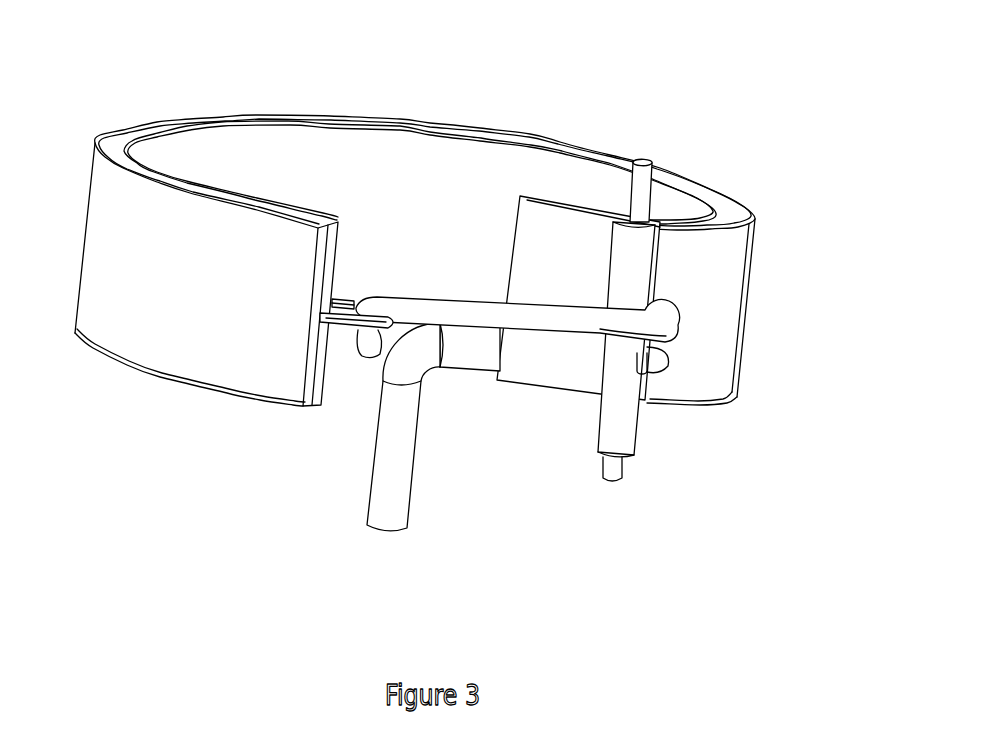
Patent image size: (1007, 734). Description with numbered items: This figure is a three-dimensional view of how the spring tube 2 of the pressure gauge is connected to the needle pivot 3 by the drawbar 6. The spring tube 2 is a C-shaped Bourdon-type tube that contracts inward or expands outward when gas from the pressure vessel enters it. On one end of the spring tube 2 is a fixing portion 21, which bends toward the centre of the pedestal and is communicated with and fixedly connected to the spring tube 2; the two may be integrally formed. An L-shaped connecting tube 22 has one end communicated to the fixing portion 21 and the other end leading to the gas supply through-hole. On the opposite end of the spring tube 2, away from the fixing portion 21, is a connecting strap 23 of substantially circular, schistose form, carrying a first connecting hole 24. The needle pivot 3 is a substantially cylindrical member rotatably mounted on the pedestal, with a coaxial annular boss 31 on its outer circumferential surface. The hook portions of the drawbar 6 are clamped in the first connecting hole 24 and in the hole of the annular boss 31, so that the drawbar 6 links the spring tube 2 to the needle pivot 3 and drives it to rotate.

The spring tube 2 is at (723, 288).
The fixing portion 21 is at (535, 240).
The connecting tube 22 is at (387, 518).
The connecting strap 23 is at (354, 334).
The first connecting hole 24 is at (350, 302).
The needle pivot 3 is at (617, 437).
The annular boss 31 is at (677, 333).
The drawbar 6 is at (533, 313).